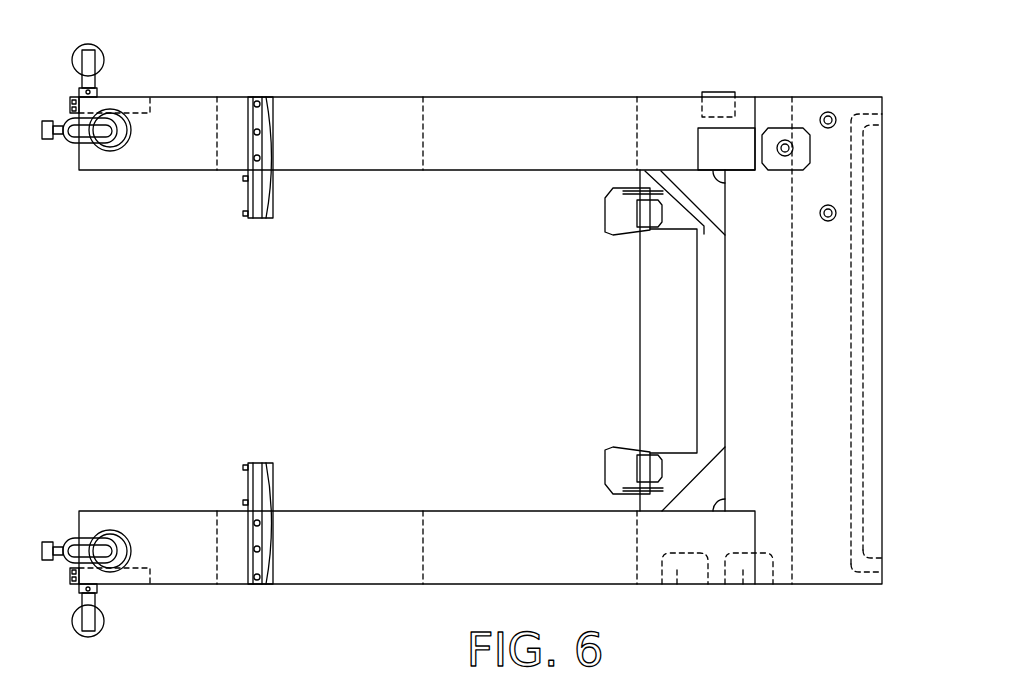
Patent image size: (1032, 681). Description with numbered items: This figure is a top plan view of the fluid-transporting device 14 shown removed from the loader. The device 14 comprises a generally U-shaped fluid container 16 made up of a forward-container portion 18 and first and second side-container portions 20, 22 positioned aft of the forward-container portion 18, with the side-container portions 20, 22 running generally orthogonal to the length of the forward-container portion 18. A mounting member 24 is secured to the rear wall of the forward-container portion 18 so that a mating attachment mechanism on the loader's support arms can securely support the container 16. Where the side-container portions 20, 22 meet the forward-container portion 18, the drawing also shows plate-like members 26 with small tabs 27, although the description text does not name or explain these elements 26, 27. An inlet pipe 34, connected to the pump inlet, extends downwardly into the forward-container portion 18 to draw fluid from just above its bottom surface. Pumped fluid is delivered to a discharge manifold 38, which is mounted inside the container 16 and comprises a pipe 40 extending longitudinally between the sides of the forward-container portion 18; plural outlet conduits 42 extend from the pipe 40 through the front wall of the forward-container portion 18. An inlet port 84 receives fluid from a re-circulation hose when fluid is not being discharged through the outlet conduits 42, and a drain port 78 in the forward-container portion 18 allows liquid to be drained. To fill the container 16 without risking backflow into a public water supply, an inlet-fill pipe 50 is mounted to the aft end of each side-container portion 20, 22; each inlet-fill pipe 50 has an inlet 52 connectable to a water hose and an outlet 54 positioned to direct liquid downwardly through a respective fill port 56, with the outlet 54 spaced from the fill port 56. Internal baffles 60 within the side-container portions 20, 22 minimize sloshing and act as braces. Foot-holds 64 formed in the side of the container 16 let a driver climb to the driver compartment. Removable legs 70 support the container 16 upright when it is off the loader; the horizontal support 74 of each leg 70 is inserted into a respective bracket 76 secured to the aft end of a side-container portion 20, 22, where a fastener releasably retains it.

The fluid-transporting device 14 is at (467, 74).
The fluid container 16 is at (544, 89).
The forward-container portion 18 is at (883, 461).
The first side-container portion 20 is at (372, 588).
The second side-container portion 22 is at (368, 120).
The mounting member 24 is at (650, 328).
The mounting plate 26 is at (265, 180).
The plate tab 27 is at (246, 220).
The inlet pipe 34 is at (785, 145).
The discharge manifold 38 is at (831, 114).
The pipe 40 is at (850, 393).
The outlet conduits 42 is at (882, 118).
The inlet-fill pipe 50 is at (60, 142).
The inlet 52 is at (48, 120).
The outlet 54 is at (115, 130).
The fill port 56 is at (117, 150).
The internal baffles 60 is at (217, 150).
The foot-holds 64 is at (677, 584).
The removable legs 70 is at (90, 46).
The horizontal support 74 is at (96, 66).
The bracket 76 is at (98, 91).
The drain port 78 is at (716, 92).
The inlet port 84 is at (820, 214).